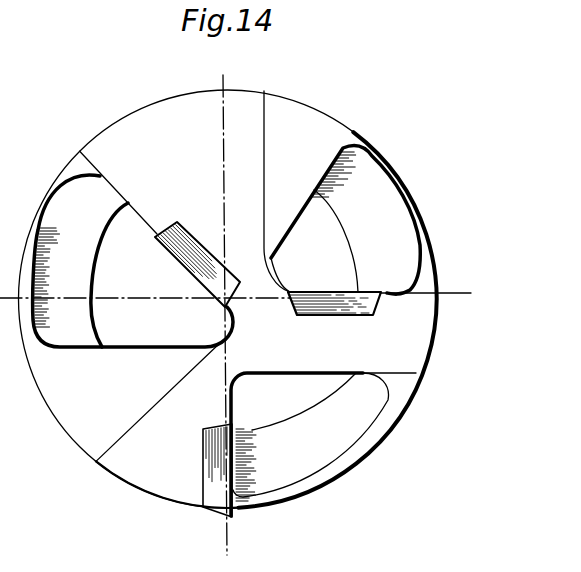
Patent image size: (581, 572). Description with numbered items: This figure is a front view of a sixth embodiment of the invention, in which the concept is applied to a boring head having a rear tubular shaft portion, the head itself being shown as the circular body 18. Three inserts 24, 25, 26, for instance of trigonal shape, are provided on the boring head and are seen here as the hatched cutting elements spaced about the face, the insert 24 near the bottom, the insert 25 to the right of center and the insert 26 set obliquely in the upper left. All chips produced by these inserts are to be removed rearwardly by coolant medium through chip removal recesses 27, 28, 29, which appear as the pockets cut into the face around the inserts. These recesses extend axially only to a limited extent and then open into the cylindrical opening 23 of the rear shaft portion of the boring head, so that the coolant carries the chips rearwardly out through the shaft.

The drill body 18 is at (128, 122).
The cylindrical opening 23 is at (250, 432).
The insert 24 is at (220, 481).
The insert 25 is at (349, 305).
The insert 26 is at (165, 233).
The chip removal recess 27 is at (305, 375).
The chip removal recess 28 is at (310, 192).
The chip removal recess 29 is at (140, 347).